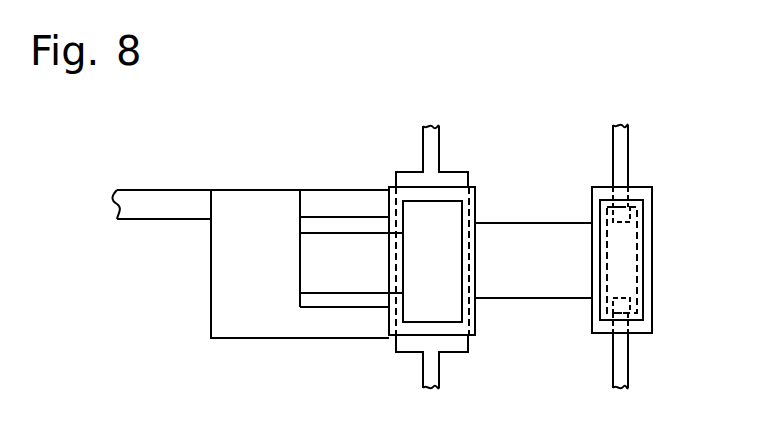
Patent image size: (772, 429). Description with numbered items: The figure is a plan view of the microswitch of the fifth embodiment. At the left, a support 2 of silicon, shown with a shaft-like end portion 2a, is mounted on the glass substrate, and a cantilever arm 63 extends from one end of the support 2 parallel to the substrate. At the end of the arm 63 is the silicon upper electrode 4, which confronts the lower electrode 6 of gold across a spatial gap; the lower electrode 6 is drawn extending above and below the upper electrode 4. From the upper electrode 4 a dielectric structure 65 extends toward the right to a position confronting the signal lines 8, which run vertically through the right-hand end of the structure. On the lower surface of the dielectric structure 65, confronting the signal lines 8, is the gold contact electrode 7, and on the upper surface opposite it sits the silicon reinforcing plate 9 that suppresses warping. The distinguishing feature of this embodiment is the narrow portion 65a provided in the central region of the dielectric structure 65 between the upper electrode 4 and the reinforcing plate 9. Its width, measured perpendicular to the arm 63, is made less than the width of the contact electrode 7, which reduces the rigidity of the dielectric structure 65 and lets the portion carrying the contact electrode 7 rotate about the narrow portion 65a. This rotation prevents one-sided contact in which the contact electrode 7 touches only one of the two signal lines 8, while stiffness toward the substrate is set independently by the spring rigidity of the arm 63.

The shaft portion 2a is at (162, 188).
The support 2 is at (253, 188).
The arm 63 is at (343, 217).
The upper electrode 4 is at (432, 218).
The lower electrode 6 is at (457, 170).
The narrow portion 65a is at (528, 222).
The dielectric structure 65 is at (652, 273).
The contact electrode 7 is at (628, 233).
The signal line 8 is at (627, 163).
The reinforcing plate 9 is at (645, 307).